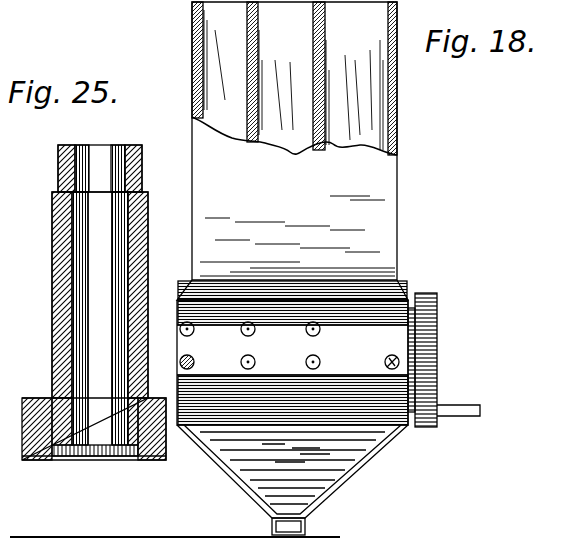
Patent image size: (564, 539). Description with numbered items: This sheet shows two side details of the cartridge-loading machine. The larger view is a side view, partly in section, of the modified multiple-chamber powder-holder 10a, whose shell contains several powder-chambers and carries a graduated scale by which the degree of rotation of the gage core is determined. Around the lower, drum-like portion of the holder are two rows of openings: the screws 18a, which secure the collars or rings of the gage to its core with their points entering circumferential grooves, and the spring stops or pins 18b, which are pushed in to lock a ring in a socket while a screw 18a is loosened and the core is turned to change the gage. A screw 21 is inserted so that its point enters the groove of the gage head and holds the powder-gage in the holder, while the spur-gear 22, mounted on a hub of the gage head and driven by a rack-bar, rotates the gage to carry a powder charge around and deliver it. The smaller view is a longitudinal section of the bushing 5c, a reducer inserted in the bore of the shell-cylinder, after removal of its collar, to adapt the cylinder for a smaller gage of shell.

In FIG. 25, the bushing 5c is at (86, 302).
In FIG. 18, the multiple-chamber powder-holder 10a is at (294, 141).
In FIG. 18, the screws 18a is at (195, 362).
In FIG. 18, the spring stop or pin 18b is at (180, 331).
In FIG. 18, the screw 21 is at (384, 362).
In FIG. 18, the spur-gear 22 is at (437, 350).